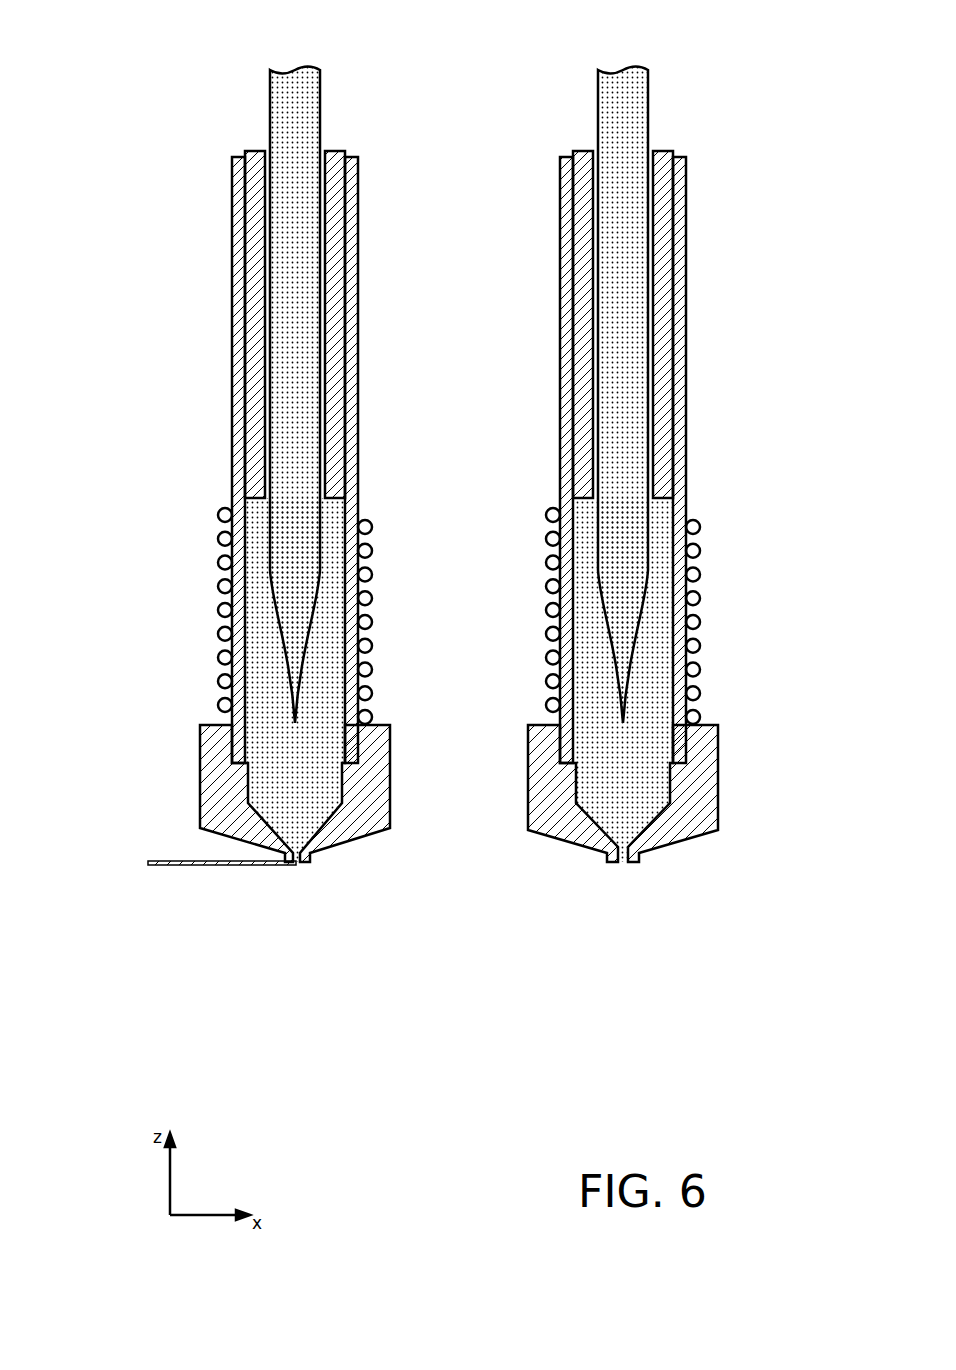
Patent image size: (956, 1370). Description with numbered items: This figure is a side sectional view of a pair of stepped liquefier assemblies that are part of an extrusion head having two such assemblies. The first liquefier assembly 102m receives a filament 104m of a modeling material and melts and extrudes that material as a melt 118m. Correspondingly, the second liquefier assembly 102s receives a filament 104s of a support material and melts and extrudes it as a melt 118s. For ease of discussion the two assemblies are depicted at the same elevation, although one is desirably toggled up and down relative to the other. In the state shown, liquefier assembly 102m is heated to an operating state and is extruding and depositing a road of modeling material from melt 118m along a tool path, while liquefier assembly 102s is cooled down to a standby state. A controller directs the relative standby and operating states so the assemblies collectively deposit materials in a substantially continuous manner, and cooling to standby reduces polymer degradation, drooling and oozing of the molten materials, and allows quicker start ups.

The first liquefier assembly 102m is at (255, 466).
The second liquefier assembly 102s is at (678, 465).
The filament of modeling material 104m is at (313, 93).
The filament of support material 104s is at (641, 93).
The melt of modeling material 118m is at (330, 685).
The melt of support material 118s is at (658, 685).